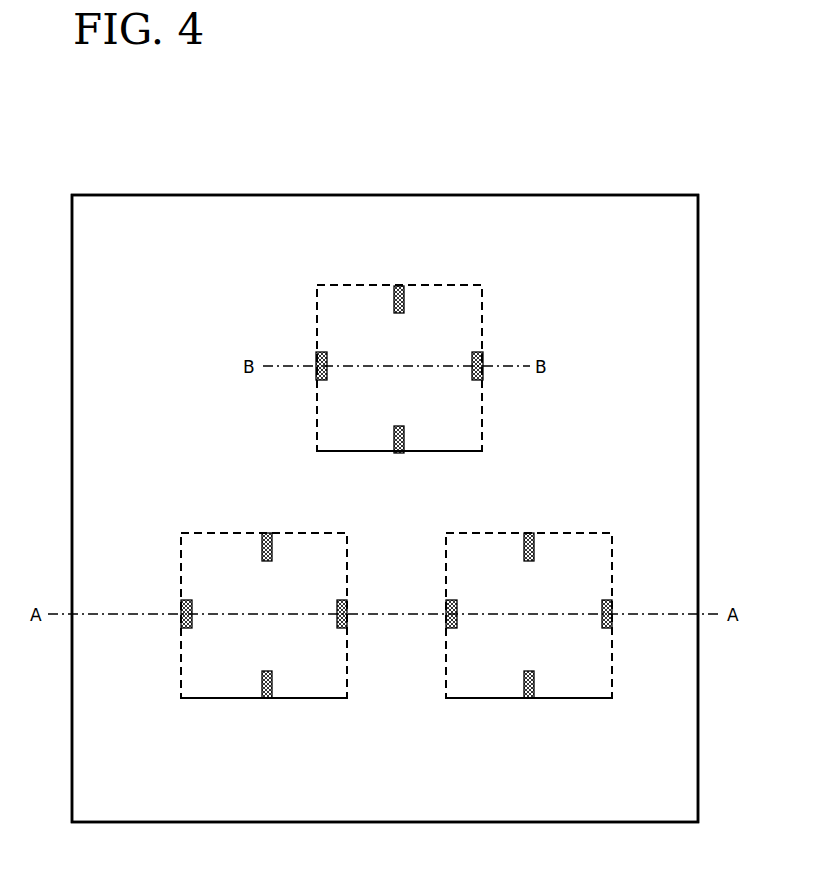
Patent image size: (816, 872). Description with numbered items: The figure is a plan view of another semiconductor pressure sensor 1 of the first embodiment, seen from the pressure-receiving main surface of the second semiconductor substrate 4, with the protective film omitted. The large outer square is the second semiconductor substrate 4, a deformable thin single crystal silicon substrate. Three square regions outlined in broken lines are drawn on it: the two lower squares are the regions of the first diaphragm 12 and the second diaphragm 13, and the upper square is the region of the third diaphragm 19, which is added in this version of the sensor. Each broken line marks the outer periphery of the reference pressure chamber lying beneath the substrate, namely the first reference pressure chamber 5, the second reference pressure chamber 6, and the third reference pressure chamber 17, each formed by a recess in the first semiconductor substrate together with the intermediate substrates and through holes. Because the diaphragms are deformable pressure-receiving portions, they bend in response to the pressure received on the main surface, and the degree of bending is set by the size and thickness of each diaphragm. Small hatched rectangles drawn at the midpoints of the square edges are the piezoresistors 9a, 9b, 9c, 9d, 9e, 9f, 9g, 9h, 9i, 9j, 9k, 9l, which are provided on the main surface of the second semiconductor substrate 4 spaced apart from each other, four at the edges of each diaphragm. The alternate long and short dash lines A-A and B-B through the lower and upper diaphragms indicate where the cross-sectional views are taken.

The semiconductor pressure sensor 1 is at (438, 168).
The second semiconductor substrate 4 is at (672, 435).
The first reference pressure chamber 5 is at (576, 656).
The second reference pressure chamber 6 is at (305, 671).
The third reference pressure chamber 17 is at (443, 407).
The first diaphragm 12 is at (580, 700).
The second diaphragm 13 is at (310, 700).
The third diaphragm 19 is at (450, 452).
The piezoresistor 9a is at (447, 617).
The piezoresistor 9b is at (612, 605).
The piezoresistor 9c is at (531, 535).
The piezoresistor 9d is at (527, 698).
The piezoresistor 9e is at (182, 617).
The piezoresistor 9f is at (342, 600).
The piezoresistor 9g is at (266, 535).
The piezoresistor 9h is at (265, 698).
The piezoresistor 9i is at (318, 372).
The piezoresistor 9j is at (483, 355).
The piezoresistor 9k is at (400, 288).
The piezoresistor 9l is at (396, 452).